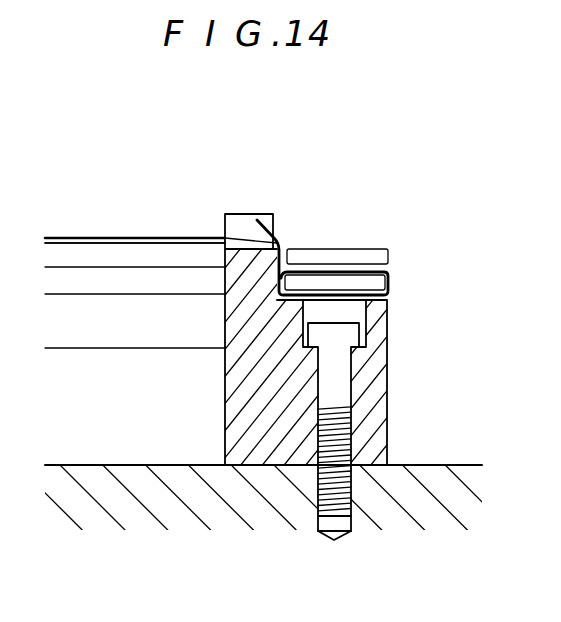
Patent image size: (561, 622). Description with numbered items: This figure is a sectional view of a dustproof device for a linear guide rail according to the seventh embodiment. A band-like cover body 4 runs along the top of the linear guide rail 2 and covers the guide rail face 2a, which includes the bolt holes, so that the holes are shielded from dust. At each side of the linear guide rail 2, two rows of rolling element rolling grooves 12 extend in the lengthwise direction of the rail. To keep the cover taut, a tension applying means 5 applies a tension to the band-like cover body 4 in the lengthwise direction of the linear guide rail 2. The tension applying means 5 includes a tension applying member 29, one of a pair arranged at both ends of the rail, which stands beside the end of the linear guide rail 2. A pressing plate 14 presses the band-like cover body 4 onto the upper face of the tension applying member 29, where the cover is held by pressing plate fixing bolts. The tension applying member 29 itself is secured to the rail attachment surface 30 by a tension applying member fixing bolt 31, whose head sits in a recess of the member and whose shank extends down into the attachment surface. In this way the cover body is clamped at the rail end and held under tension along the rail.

The linear guide rail 2 is at (137, 442).
The guide rail face 2a is at (184, 240).
The band-like cover body 4 is at (144, 233).
The tension applying means 5 is at (367, 218).
The rolling element rolling grooves 12 is at (100, 318).
The pressing plate 14 is at (377, 257).
The tension applying member 29 is at (378, 400).
The rail attachment surface 30 is at (433, 466).
The tension applying member fixing bolt 31 is at (345, 333).